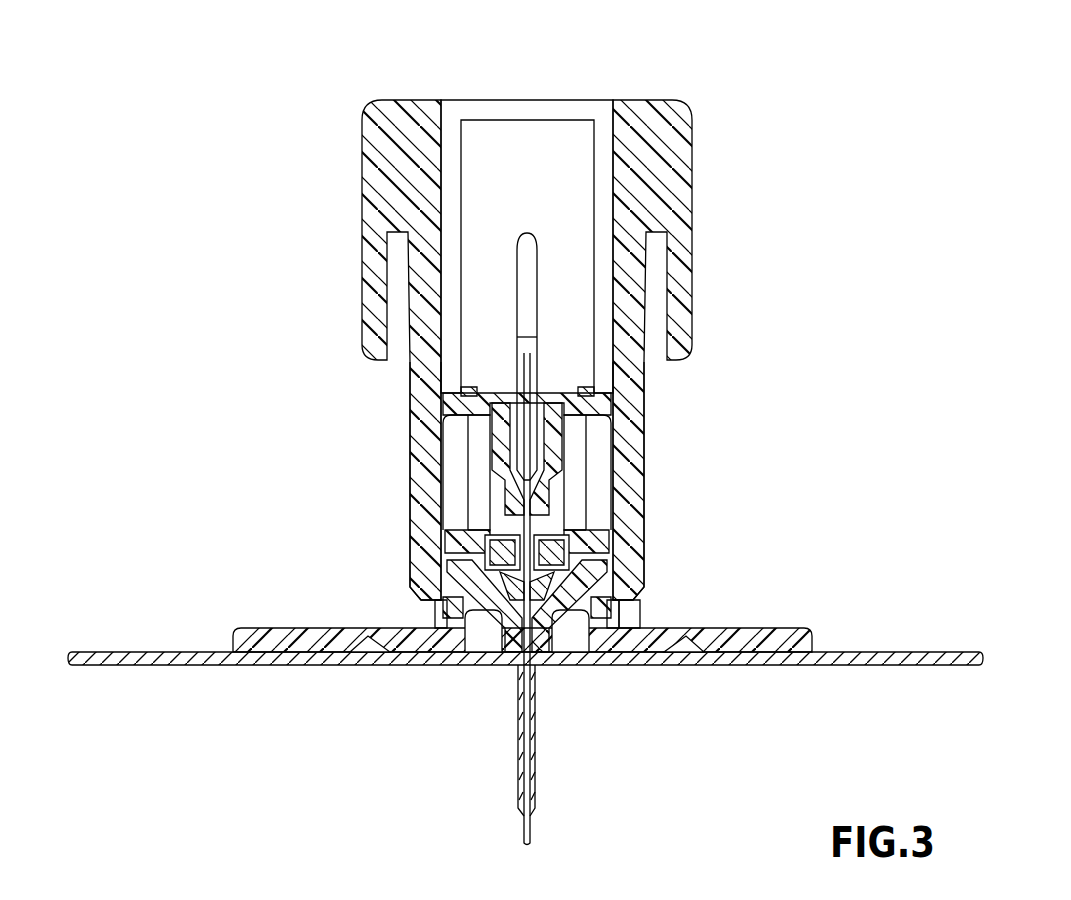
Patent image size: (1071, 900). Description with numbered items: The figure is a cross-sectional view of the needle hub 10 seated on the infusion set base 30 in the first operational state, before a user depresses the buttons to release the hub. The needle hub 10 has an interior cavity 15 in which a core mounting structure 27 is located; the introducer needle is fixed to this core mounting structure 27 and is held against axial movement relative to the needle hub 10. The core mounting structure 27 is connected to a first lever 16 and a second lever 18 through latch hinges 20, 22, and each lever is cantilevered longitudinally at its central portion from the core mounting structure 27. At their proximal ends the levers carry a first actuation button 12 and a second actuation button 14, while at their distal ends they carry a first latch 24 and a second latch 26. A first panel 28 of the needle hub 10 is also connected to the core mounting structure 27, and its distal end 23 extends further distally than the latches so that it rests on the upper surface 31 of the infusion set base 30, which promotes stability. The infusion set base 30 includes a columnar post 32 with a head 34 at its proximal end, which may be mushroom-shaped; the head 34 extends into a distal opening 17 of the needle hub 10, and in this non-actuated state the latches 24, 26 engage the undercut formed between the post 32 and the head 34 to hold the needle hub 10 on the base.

The needle hub 10 is at (738, 113).
The first actuation button 12 is at (362, 203).
The second actuation button 14 is at (692, 212).
The interior cavity 15 is at (555, 322).
The first lever 16 is at (410, 457).
The distal opening 17 is at (445, 555).
The second lever 18 is at (636, 478).
The first latch hinge 20 is at (445, 395).
The second latch hinge 22 is at (606, 397).
The distal end of the first panel 23 is at (437, 615).
The first latch 24 is at (445, 578).
The second latch 26 is at (603, 570).
The core mounting structure 27 is at (492, 465).
The first panel 28 is at (512, 155).
The infusion set base 30 is at (822, 624).
The upper surface 31 is at (750, 630).
The columnar post 32 is at (626, 600).
The head 34 is at (600, 545).